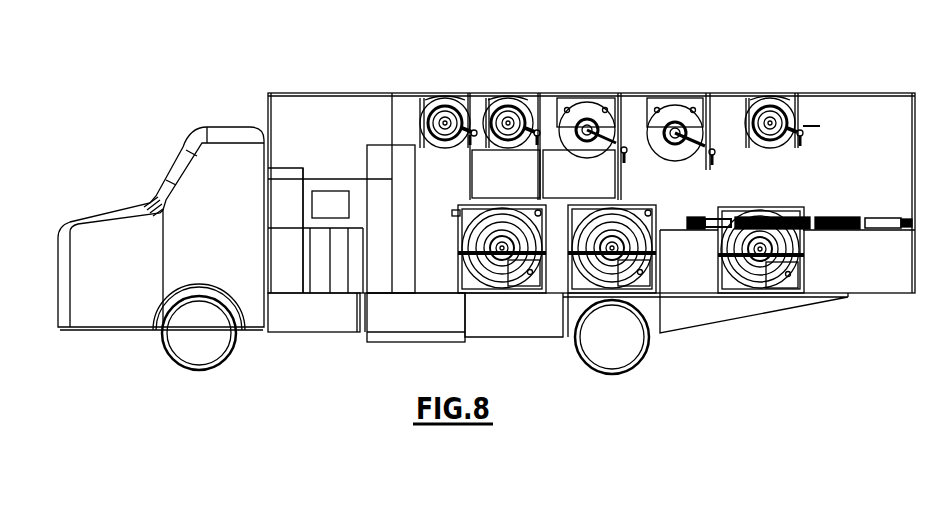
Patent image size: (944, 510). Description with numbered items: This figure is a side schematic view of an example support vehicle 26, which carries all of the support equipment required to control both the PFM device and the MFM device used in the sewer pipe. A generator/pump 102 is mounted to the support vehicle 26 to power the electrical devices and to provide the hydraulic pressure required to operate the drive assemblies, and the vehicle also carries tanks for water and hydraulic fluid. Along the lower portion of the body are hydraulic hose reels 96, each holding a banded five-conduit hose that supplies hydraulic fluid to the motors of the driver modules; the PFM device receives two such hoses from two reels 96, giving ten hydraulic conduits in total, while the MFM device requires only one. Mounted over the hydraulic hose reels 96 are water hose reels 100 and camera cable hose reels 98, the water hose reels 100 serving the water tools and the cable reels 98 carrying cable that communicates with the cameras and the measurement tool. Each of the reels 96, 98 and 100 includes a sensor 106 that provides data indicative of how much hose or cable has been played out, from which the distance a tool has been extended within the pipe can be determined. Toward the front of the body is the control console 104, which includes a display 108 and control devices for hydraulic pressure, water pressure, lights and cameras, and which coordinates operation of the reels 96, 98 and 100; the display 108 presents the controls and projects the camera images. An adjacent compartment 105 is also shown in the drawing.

The support vehicle 26 is at (148, 116).
The hydraulic hose reels 96 is at (575, 275).
The camera cable hose reels 98 is at (447, 98).
The water hose reels 100 is at (672, 105).
The generator/pump 102 is at (327, 322).
The control console 104 is at (309, 177).
The storage compartment 105 is at (418, 322).
The sensor 106 is at (472, 140).
The display 108 is at (333, 198).